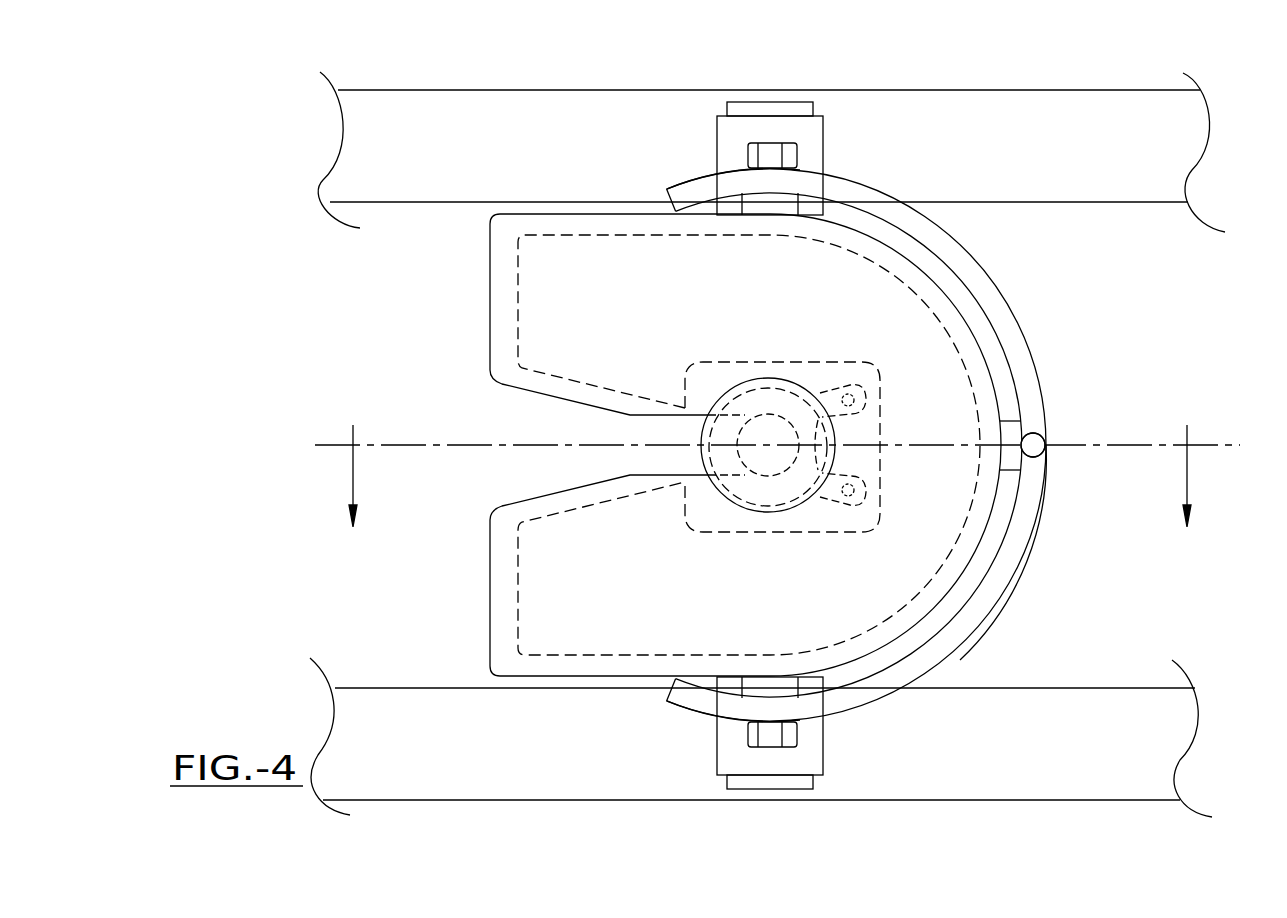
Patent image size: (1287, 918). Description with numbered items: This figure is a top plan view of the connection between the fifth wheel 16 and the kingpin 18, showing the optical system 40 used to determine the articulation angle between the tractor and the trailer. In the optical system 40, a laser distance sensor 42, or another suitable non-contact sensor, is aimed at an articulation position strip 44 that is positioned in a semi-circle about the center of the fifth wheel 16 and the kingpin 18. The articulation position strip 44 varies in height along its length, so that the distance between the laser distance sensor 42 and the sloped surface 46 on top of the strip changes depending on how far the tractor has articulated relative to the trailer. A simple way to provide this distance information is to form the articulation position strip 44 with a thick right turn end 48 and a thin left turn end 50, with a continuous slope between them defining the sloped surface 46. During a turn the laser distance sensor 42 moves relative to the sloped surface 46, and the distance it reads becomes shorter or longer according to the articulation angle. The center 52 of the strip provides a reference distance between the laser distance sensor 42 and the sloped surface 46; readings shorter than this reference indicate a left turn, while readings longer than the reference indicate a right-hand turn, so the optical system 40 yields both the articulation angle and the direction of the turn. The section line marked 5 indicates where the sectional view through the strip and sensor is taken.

The section line 5- 5 is at (769, 493).
The fifth wheel 16 is at (491, 238).
The kingpin 18 is at (771, 427).
The optical system 40 is at (1026, 281).
The laser distance sensor 42 is at (1042, 456).
The articulation position strip 44 is at (1024, 324).
The sloped surface 46 is at (1003, 573).
The right turn end 48 is at (685, 192).
The left turn end 50 is at (708, 705).
The center 52 is at (1033, 446).